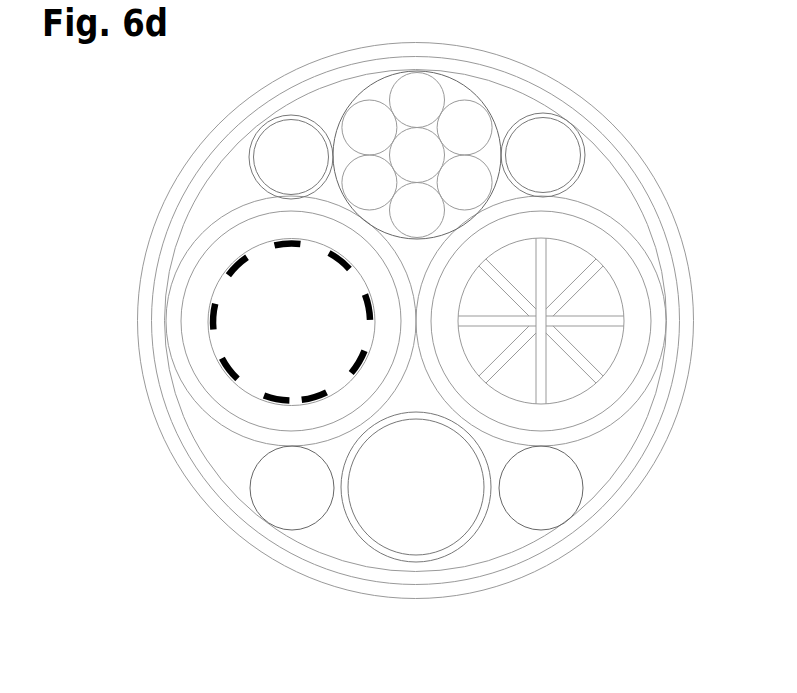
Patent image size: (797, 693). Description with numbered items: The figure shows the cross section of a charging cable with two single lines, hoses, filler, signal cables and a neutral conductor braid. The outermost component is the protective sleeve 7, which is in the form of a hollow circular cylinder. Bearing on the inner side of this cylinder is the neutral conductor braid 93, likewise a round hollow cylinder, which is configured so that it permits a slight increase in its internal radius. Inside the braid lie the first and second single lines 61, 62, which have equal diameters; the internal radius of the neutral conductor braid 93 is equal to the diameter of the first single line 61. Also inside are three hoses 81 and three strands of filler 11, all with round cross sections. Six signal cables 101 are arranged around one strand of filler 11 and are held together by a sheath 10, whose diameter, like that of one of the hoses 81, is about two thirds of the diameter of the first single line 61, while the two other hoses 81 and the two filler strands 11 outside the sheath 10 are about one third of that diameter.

The protective sleeve 7 is at (653, 450).
The neutral conductor braid 93 is at (658, 408).
The first single line 61 is at (228, 347).
The second single line 62 is at (595, 350).
The hoses 81 is at (287, 143).
The strands of filler 11 is at (285, 497).
The sheath 10 is at (463, 90).
The signal cables 101 is at (463, 183).